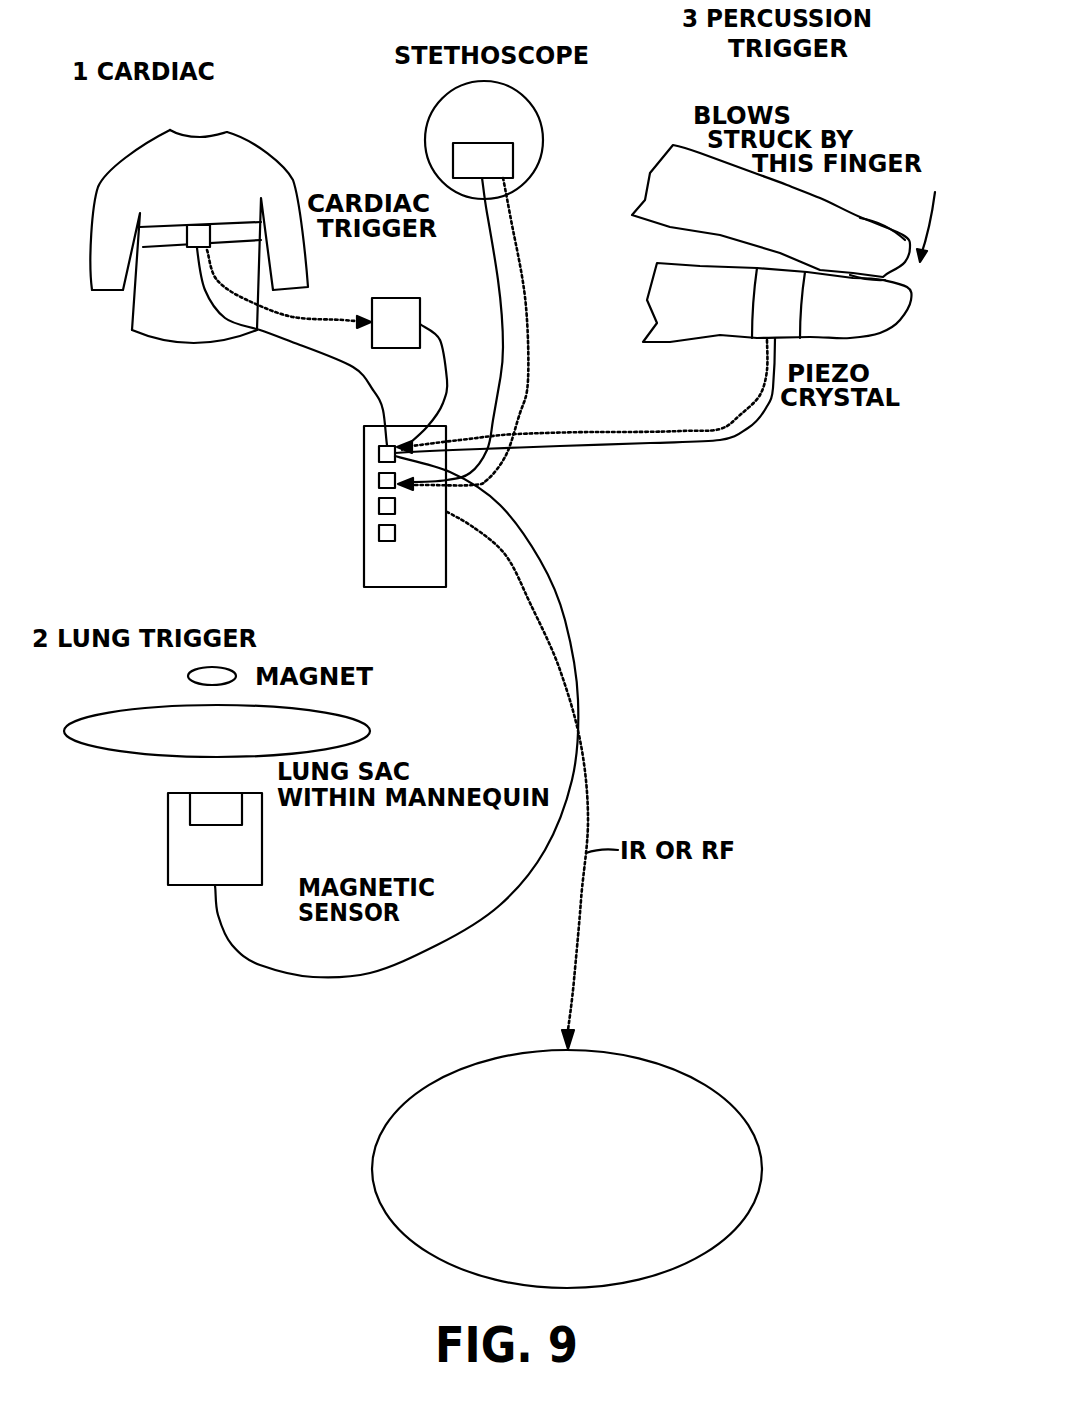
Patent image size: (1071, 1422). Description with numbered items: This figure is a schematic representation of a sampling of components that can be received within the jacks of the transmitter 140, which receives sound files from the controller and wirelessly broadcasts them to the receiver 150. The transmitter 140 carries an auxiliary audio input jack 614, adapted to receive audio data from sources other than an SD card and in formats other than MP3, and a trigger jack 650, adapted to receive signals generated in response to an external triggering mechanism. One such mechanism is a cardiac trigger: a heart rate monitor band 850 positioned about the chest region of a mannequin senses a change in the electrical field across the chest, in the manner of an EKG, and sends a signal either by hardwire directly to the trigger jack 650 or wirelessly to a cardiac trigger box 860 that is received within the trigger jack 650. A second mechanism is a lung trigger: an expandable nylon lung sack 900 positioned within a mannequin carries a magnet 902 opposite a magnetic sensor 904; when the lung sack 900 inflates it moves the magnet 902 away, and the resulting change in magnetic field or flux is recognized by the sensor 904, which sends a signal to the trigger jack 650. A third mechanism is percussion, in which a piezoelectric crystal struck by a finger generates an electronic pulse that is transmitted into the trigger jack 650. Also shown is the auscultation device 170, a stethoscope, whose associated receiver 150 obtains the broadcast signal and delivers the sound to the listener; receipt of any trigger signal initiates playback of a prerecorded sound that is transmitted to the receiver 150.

The heart rate monitor band 850 is at (208, 226).
The cardiac trigger box 860 is at (420, 320).
The auscultation device 170 is at (508, 125).
The receiver 150 is at (504, 177).
The transmitter 140 is at (364, 558).
The trigger jack 650 is at (378, 453).
The auxiliary audio input jack 614 is at (378, 481).
The lung sack 900 is at (350, 730).
The magnet 902 is at (208, 674).
The sensor 904 is at (177, 852).